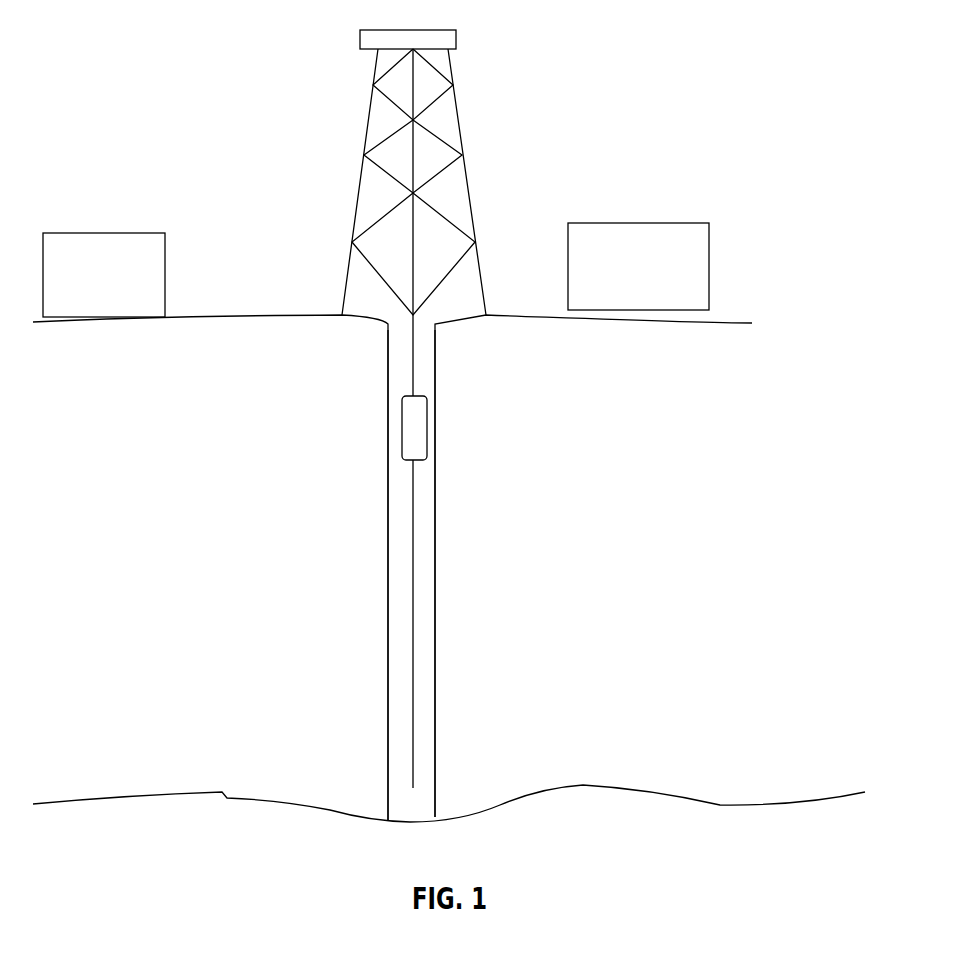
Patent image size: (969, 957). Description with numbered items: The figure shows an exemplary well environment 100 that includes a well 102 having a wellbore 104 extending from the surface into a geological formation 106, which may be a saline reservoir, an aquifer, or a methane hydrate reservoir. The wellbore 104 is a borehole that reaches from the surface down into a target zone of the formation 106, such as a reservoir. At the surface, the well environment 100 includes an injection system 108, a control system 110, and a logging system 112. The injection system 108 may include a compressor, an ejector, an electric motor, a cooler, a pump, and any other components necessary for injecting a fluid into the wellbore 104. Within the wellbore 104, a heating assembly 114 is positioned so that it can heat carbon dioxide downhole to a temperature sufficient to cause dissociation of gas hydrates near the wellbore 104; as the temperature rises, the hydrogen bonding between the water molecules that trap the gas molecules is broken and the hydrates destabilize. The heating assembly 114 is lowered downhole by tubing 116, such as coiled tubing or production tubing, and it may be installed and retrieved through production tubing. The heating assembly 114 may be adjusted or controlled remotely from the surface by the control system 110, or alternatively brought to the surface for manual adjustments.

The well environment 100 is at (645, 93).
The well 102 is at (467, 125).
The wellbore 104 is at (436, 543).
The geological formation 106 is at (625, 400).
The injection system 108 is at (323, 264).
The control system 110 is at (102, 233).
The logging system 112 is at (646, 223).
The heating assembly 114 is at (410, 427).
The tubing 116 is at (415, 353).